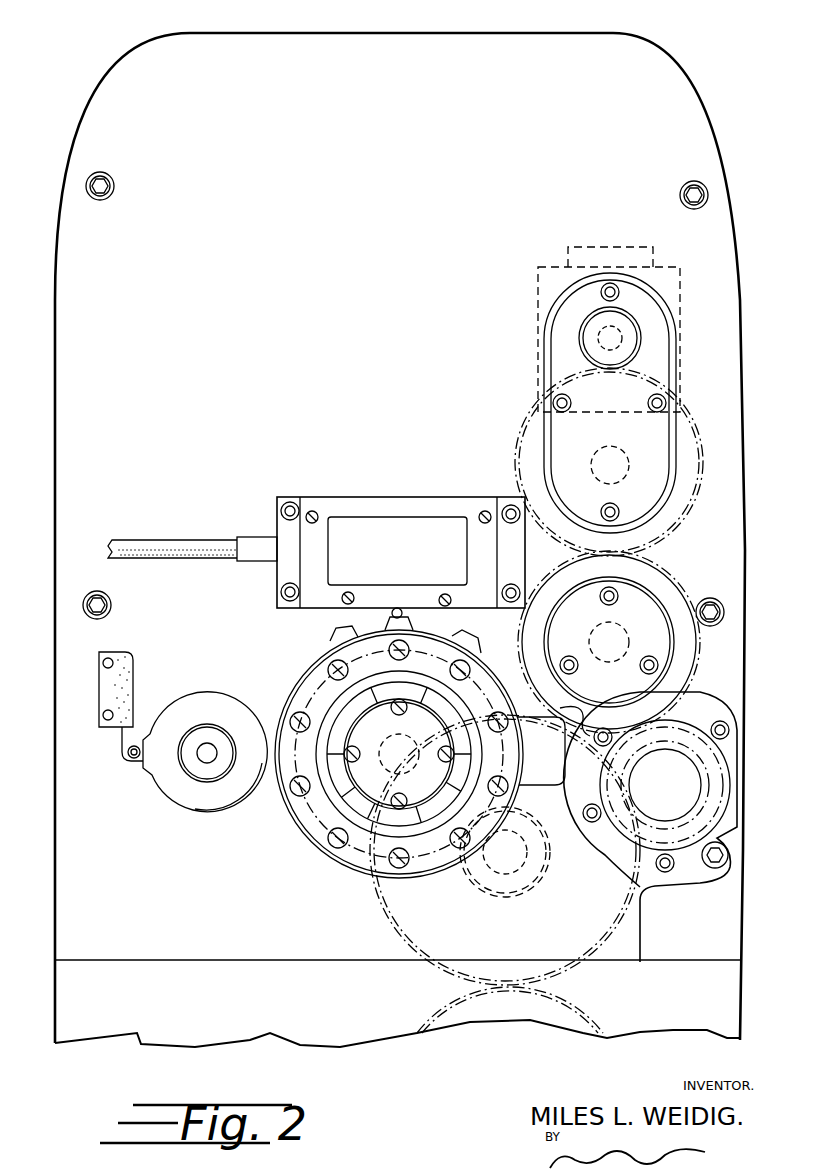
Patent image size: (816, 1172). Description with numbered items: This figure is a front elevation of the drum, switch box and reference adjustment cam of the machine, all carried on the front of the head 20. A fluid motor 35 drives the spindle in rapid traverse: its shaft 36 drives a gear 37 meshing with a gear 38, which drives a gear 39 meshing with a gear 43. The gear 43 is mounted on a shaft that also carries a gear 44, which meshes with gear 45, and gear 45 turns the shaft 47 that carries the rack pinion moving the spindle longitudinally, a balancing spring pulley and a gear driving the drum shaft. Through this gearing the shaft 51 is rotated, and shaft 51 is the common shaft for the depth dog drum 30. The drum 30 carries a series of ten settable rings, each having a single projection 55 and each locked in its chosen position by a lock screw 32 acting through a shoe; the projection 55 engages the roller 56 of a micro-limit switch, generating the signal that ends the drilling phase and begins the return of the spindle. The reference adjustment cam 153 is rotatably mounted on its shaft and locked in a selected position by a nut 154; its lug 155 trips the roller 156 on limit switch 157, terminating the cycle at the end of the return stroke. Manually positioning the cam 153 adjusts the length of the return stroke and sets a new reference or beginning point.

The head 20 is at (672, 127).
The depth dog drum 30 is at (300, 702).
The lock screw 32 is at (352, 845).
The fluid motor 35 is at (683, 298).
The shaft 36 is at (622, 335).
The gear 37 is at (578, 337).
The gear 38 is at (700, 452).
The gear 39 is at (680, 583).
The gear 43 is at (693, 740).
The gear 44 is at (703, 787).
The gear 45 is at (612, 937).
The shaft 47 is at (522, 872).
The shaft 51 is at (374, 747).
The projection 55 is at (330, 638).
The roller 56 is at (423, 607).
The cam 153 is at (200, 705).
The nut 154 is at (200, 775).
The lug 155 is at (150, 770).
The roller 156 is at (130, 765).
The limit switch 157 is at (98, 680).